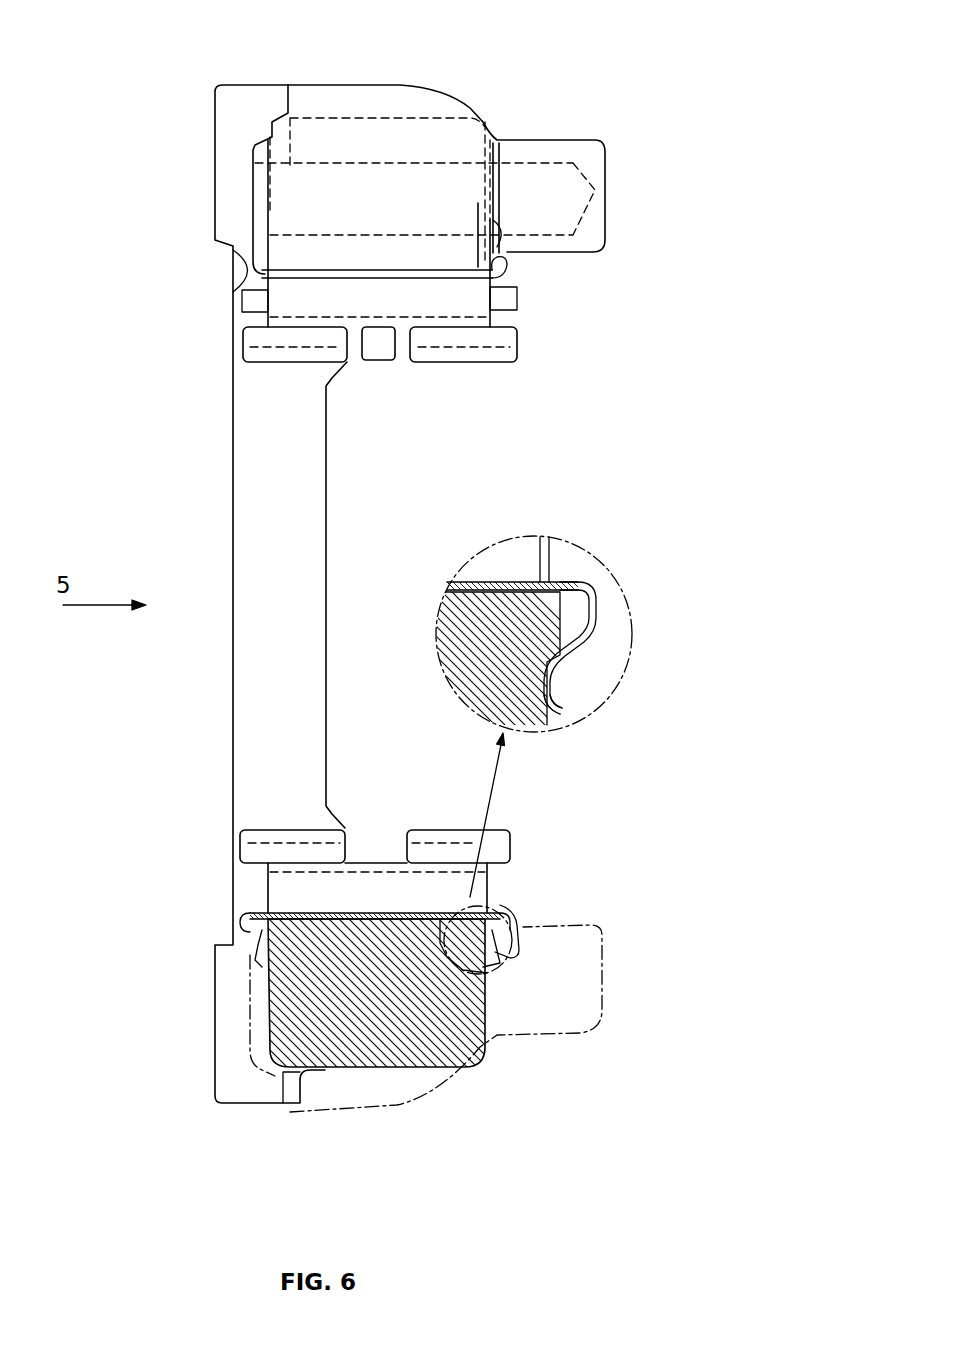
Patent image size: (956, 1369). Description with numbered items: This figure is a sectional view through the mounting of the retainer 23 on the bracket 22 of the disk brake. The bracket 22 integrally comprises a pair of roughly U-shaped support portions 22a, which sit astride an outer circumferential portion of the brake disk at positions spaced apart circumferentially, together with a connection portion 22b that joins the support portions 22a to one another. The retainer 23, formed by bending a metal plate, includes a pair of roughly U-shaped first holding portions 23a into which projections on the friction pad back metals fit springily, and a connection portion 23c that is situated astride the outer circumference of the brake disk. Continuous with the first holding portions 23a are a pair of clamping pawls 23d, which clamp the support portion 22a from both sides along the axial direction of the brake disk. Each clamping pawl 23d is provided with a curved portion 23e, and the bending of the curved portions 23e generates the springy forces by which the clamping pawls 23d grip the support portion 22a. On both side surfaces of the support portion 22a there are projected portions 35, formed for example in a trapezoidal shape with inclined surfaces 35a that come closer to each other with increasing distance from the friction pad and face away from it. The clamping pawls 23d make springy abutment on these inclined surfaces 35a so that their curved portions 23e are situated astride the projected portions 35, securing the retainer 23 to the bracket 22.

The bracket 22 is at (226, 732).
The support portion 22a is at (340, 87).
The connection portion 22b is at (310, 577).
The retainer 23 is at (493, 368).
The first holding portion 23a is at (487, 887).
The connection portion 23c is at (447, 303).
The clamping pawl 23d is at (513, 247).
The curved portion 23e is at (250, 263).
The projected portion 35 is at (561, 626).
The inclined surface 35a is at (560, 663).